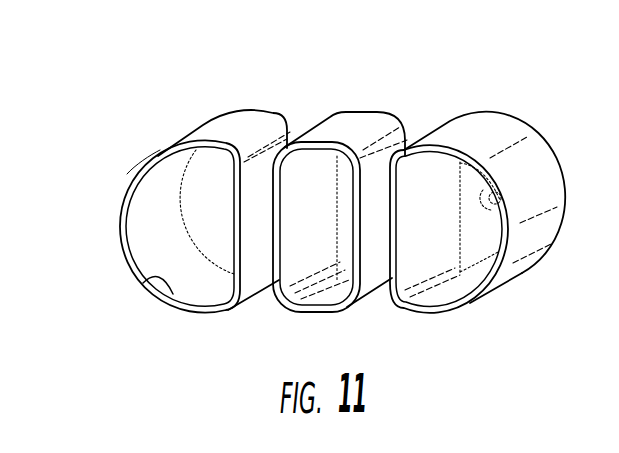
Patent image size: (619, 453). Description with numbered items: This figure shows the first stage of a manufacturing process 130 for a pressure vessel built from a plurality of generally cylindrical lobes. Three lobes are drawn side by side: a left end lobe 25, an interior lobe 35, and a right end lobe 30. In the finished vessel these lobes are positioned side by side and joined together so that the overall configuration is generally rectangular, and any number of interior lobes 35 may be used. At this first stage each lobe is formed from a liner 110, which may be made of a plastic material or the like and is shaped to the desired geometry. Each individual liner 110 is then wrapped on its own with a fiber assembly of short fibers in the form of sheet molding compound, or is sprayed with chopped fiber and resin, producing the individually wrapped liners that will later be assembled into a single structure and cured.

The left end lobe 25 is at (157, 196).
The interior lobe 35 is at (340, 194).
The right end lobe 30 is at (491, 205).
The manufacturing process 130 is at (111, 224).
The liner 110 is at (150, 287).